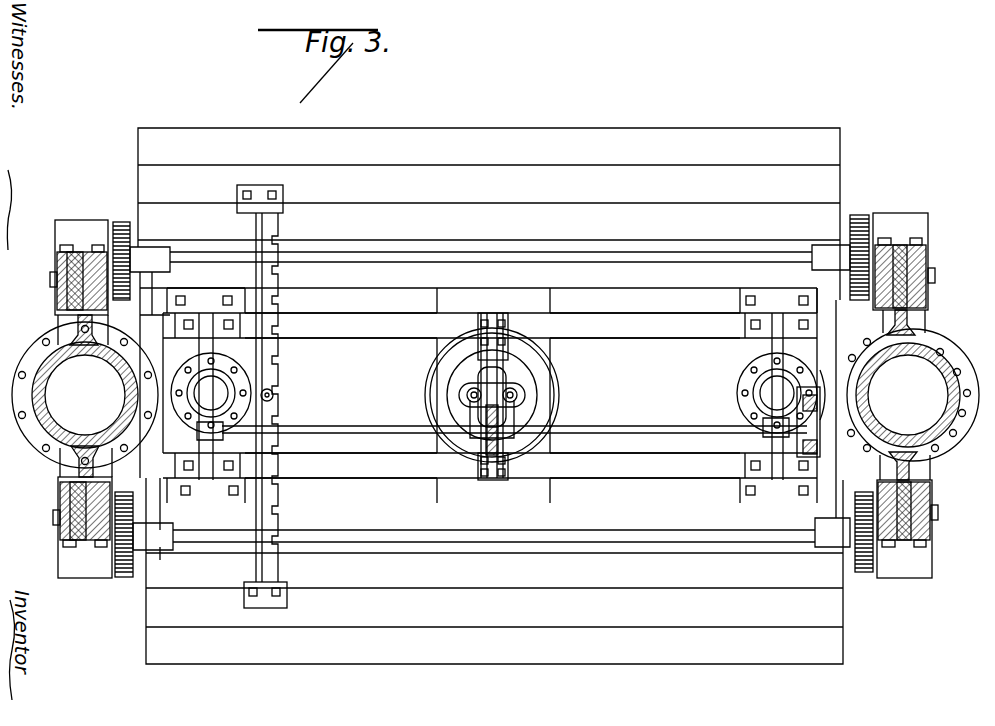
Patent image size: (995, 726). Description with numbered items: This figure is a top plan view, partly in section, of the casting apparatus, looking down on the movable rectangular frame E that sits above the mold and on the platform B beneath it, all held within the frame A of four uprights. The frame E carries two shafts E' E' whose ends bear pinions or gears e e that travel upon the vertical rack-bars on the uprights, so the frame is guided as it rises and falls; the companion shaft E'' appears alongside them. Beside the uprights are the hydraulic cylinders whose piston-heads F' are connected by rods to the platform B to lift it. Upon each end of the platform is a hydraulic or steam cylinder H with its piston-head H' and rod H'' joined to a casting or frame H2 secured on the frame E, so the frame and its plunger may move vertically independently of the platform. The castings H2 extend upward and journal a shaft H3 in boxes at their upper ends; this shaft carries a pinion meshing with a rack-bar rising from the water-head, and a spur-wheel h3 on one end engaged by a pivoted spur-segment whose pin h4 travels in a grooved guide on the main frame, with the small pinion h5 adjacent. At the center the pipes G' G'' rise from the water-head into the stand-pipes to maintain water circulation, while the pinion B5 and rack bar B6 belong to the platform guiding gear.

The movable platform B is at (385, 226).
The frame A is at (52, 296).
The pinions or gears e is at (493, 398).
The rectangular frame E is at (492, 395).
The shafts E' is at (494, 528).
The upper shaft E'' is at (491, 264).
The piston-head F' is at (495, 395).
The hydraulic or steam cylinder H is at (613, 395).
The piston-head H' is at (501, 399).
The vertical rod H'' is at (476, 430).
The casting or frame H2 is at (190, 378).
The shaft H3 is at (345, 425).
The pipe G' is at (492, 395).
The hub G'' is at (483, 397).
The pinion B5 is at (273, 394).
The rack bar B6 is at (270, 521).
The spur-wheel h3 is at (810, 452).
The pin h4 is at (858, 418).
The pinion h5 is at (806, 387).